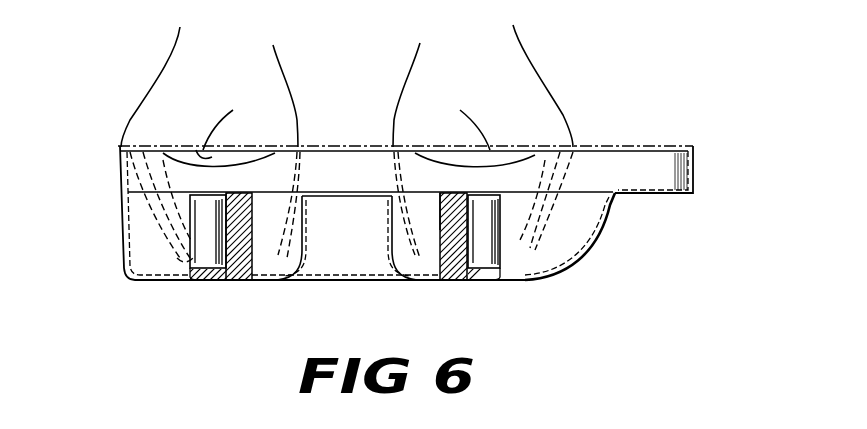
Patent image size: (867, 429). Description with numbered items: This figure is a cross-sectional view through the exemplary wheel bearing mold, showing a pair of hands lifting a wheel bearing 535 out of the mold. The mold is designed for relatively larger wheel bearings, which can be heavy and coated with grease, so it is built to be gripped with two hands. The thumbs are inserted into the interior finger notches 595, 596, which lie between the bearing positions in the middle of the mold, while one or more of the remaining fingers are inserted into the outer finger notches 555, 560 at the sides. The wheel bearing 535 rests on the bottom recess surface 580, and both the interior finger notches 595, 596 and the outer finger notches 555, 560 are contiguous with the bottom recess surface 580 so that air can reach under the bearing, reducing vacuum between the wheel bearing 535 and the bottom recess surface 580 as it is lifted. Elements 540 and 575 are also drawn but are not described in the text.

The wheel bearing 535 is at (443, 193).
The pin member 540 is at (203, 255).
The outer finger notch 555 is at (572, 250).
The outer finger notch 560 is at (145, 245).
The flange recess 575 is at (576, 178).
The bottom recess surface 580 is at (248, 284).
The interior finger notch 595 is at (400, 194).
The interior finger notch 596 is at (298, 192).